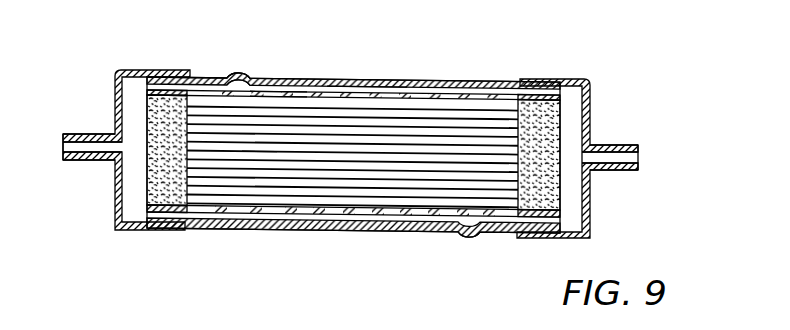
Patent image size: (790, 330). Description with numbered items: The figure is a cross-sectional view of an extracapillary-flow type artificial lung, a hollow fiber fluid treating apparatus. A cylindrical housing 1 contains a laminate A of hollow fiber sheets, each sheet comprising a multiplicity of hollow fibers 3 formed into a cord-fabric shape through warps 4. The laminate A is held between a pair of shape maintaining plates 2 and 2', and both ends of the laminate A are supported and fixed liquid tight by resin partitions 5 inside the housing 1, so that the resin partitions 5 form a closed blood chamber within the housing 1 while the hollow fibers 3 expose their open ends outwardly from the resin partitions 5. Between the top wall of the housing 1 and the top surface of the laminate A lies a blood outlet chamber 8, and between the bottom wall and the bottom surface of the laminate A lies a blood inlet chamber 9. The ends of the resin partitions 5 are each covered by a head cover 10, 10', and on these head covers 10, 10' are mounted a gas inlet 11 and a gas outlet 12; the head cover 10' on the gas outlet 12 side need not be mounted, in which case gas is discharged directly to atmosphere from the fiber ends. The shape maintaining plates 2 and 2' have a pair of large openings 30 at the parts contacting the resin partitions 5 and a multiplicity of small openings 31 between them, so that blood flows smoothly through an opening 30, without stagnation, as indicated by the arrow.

The housing 1 is at (470, 83).
The shape maintaining plate 2 is at (353, 239).
The shape maintaining plate 2' is at (353, 67).
The hollow fibers 3 is at (313, 115).
The warps 4 is at (297, 82).
The resin partition 5 is at (175, 200).
The blood outlet chamber 8 is at (357, 93).
The blood inlet chamber 9 is at (342, 217).
The head cover 10 is at (126, 175).
The head cover 10' is at (580, 139).
The gas inlet 11 is at (70, 160).
The gas outlet 12 is at (625, 148).
The large opening 30 is at (207, 87).
The small openings 31 is at (273, 92).
The laminate of hollow fiber sheets A is at (257, 193).